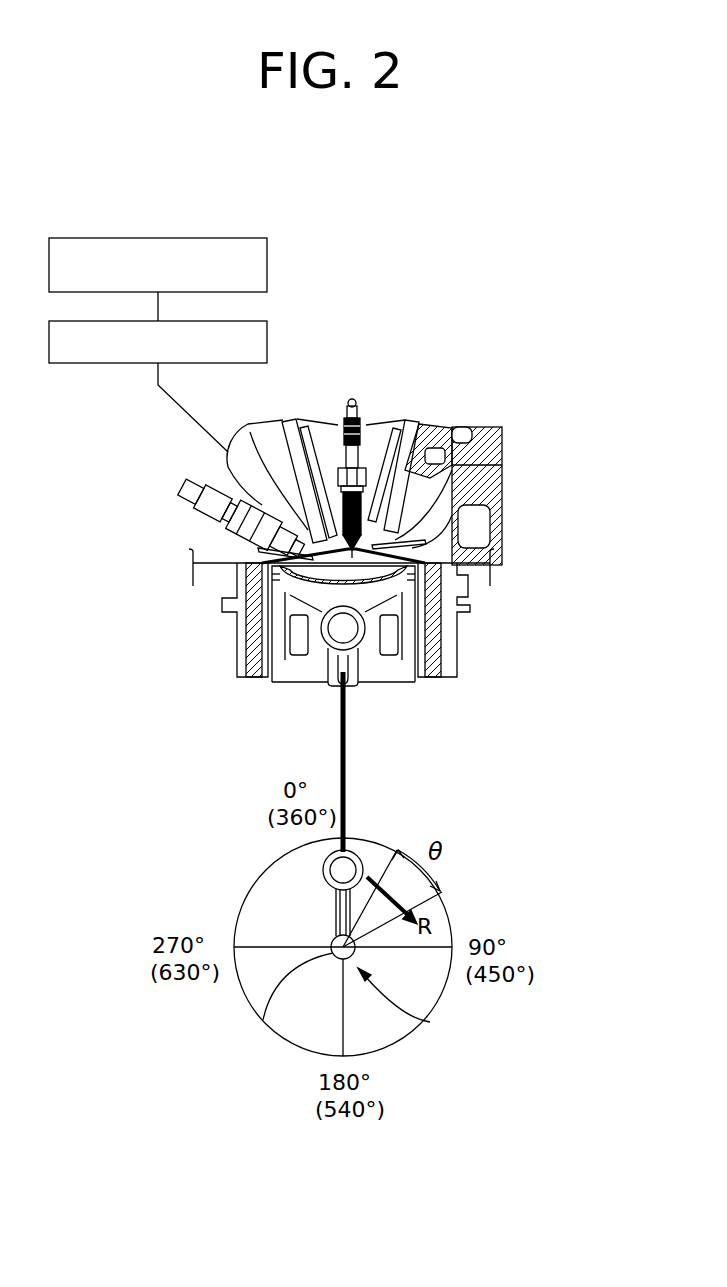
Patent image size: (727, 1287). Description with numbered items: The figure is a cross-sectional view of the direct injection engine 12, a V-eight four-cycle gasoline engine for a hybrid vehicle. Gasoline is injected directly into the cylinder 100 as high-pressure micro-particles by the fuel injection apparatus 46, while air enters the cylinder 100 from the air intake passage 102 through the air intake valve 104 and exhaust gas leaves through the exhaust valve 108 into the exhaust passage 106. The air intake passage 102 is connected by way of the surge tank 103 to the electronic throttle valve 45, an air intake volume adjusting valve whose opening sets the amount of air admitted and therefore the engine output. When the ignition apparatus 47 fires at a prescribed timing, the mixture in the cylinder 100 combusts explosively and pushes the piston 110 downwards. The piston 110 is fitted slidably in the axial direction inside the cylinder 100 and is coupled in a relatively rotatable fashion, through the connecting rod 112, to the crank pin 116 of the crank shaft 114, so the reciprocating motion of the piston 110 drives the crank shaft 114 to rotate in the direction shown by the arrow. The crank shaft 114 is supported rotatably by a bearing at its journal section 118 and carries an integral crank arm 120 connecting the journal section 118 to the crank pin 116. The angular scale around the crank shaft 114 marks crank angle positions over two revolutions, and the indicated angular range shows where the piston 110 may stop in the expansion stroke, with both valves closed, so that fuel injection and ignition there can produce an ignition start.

The direct injection engine 12 is at (523, 378).
The electronic throttle valve 45 is at (210, 238).
The fuel injection apparatus 46 is at (200, 508).
The ignition apparatus 47 is at (372, 425).
The cylinder 100 is at (433, 632).
The air intake passage 102 is at (238, 470).
The surge tank 103 is at (214, 321).
The air intake valve 104 is at (253, 430).
The exhaust passage 106 is at (454, 484).
The exhaust valve 108 is at (502, 503).
The piston 110 is at (305, 640).
The connecting rod 112 is at (347, 760).
The crank shaft 114 is at (430, 1022).
The crank pin 116 is at (321, 868).
The journal section 118 is at (263, 1020).
The crank arm 120 is at (337, 917).